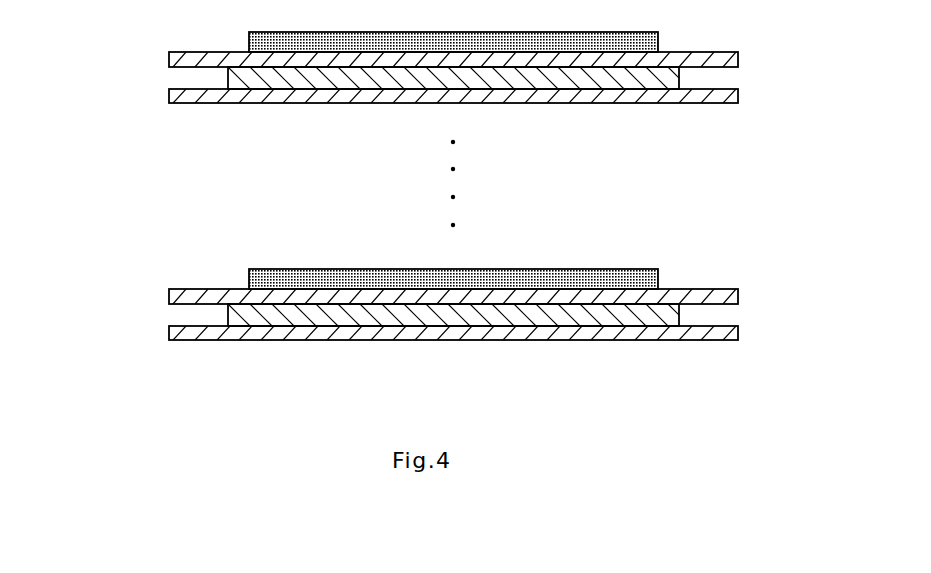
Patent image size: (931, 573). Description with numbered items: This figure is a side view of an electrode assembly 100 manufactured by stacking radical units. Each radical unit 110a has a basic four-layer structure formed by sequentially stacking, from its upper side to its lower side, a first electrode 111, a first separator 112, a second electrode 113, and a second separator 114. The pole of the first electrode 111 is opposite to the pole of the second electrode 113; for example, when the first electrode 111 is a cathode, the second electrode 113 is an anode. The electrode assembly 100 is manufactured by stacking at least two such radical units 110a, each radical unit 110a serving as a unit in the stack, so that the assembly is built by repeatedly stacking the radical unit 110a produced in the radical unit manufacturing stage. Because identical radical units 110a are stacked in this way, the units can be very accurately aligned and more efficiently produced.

The electrode assembly 100 is at (428, 183).
The radical unit 110a is at (382, 183).
The first electrode 111 is at (249, 41).
The first separator 112 is at (169, 60).
The second electrode 113 is at (228, 79).
The second separator 114 is at (417, 217).